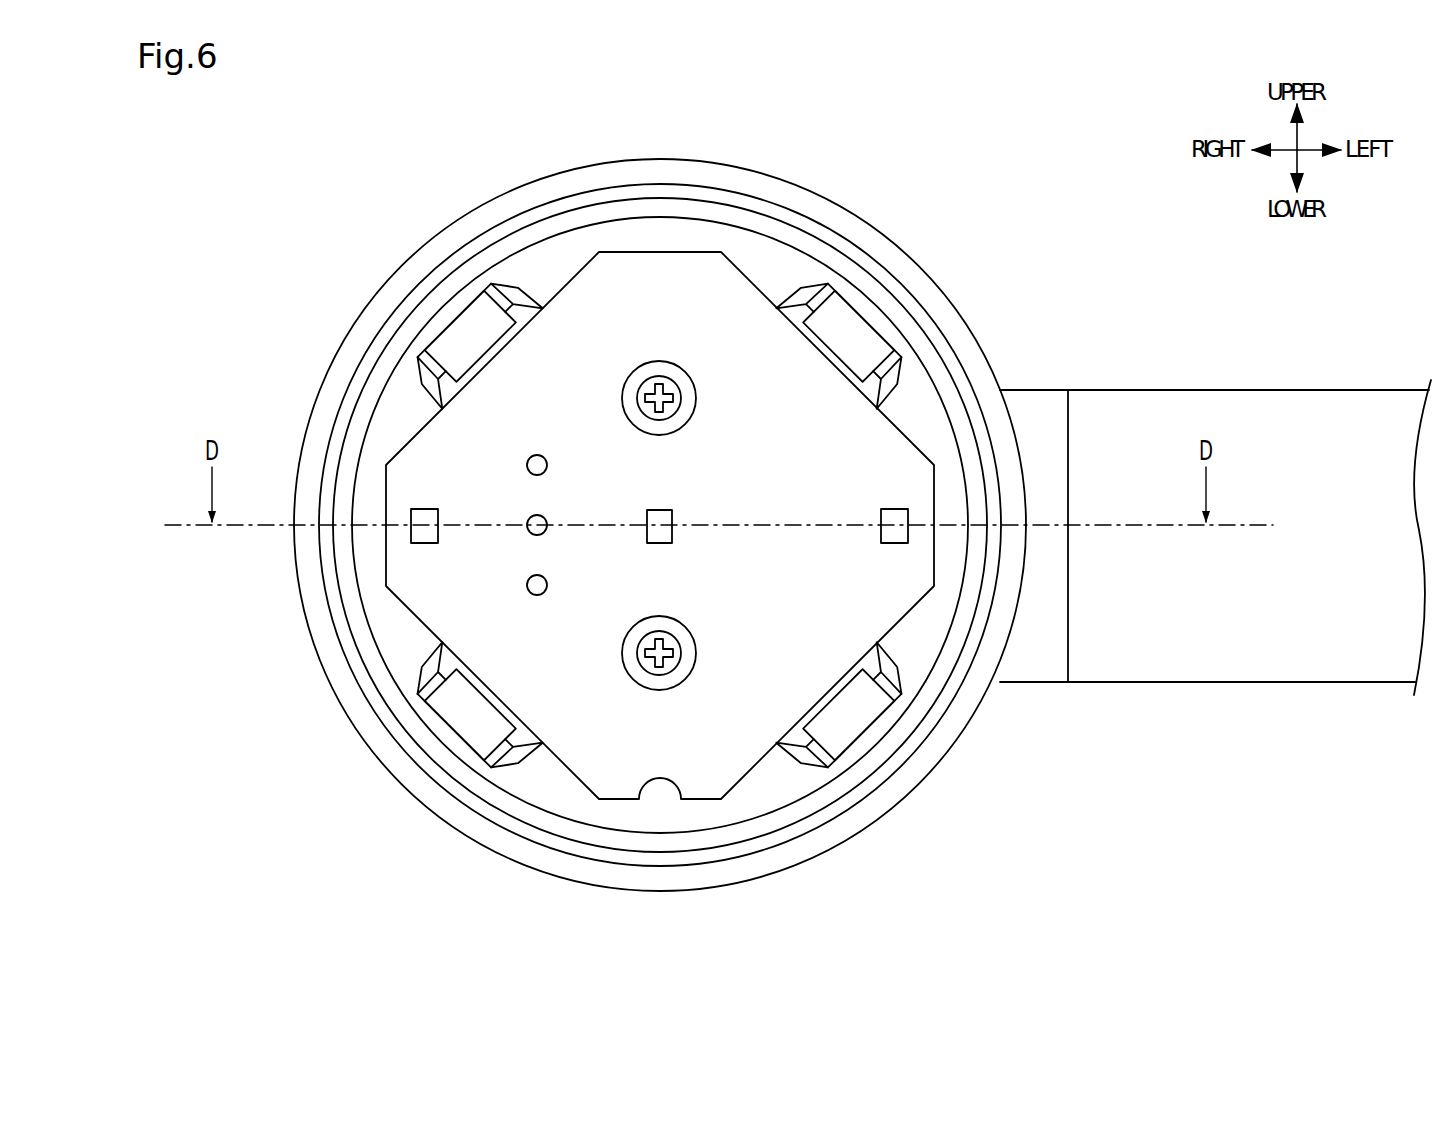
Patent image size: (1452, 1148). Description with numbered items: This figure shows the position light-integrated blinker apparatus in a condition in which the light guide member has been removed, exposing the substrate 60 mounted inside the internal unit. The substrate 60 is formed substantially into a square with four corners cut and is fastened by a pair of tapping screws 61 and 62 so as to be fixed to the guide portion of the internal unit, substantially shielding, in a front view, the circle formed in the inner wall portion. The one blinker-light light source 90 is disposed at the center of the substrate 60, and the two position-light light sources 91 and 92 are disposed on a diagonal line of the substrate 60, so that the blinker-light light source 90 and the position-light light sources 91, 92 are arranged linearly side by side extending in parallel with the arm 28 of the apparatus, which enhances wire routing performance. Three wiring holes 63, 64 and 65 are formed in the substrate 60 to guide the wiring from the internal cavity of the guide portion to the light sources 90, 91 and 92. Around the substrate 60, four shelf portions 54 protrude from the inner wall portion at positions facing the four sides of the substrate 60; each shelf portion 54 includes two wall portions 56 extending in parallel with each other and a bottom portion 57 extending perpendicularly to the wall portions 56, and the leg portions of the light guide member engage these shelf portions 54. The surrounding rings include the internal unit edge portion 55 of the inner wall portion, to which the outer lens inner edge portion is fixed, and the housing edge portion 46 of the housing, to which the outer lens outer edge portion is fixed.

The arm 28 is at (1323, 422).
The housing edge portion 46 is at (310, 580).
The shelf portion 54 is at (441, 321).
The internal unit edge portion 55 is at (342, 550).
The wall portion 56 is at (513, 297).
The bottom portion 57 is at (468, 325).
The substrate 60 is at (700, 295).
The tapping screw 61 is at (651, 366).
The tapping screw 62 is at (640, 678).
The wiring hole 63 is at (526, 463).
The wiring hole 64 is at (526, 523).
The wiring hole 65 is at (526, 588).
The blinker-light light source 90 is at (660, 544).
The position-light light source 91 is at (422, 543).
The position-light light source 92 is at (894, 508).